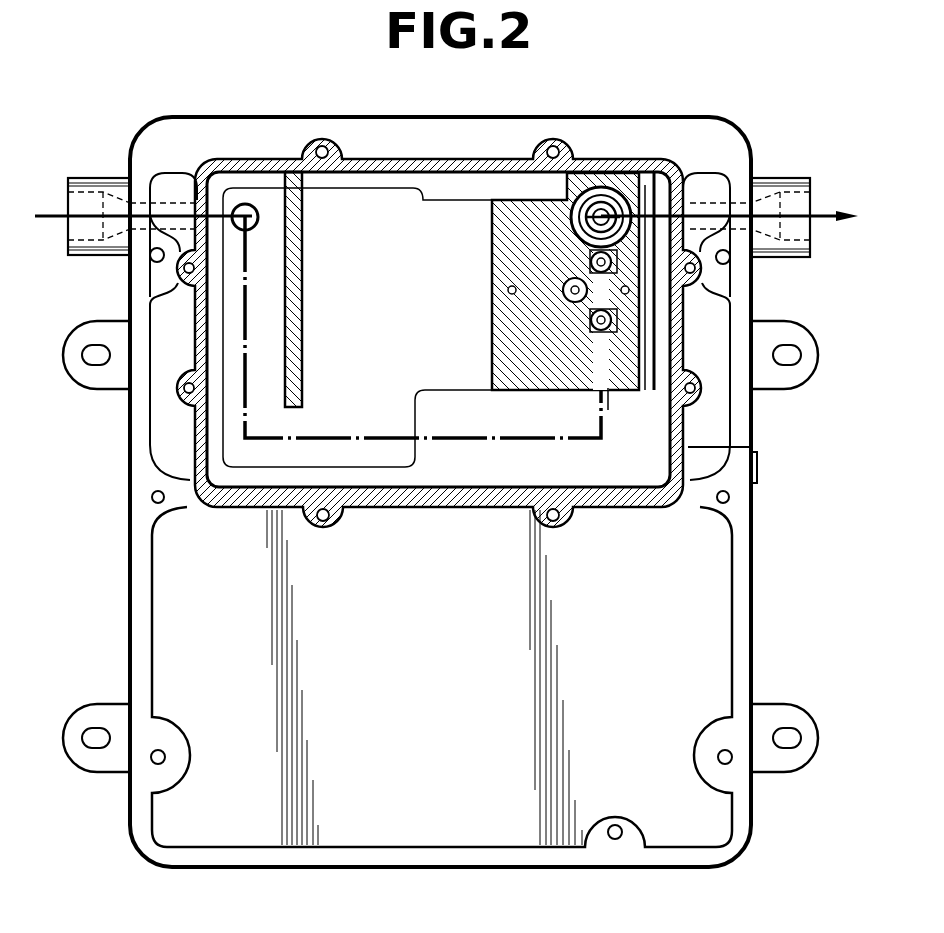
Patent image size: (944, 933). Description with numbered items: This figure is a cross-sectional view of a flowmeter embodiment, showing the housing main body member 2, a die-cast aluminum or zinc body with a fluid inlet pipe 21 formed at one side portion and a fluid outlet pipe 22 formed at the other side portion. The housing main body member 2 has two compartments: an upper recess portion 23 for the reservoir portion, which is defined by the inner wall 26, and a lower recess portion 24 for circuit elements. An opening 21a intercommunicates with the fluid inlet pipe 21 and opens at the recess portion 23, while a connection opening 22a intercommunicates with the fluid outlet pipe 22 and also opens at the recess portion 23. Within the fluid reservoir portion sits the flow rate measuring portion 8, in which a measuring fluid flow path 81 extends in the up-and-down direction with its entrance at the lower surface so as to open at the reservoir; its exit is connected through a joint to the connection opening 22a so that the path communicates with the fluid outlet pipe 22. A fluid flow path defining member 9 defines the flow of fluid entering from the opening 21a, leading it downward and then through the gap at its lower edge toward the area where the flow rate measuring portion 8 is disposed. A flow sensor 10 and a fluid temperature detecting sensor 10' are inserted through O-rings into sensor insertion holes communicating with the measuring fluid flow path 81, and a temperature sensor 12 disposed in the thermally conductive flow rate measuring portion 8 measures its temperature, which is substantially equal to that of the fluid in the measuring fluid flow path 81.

The housing main body member 2 is at (437, 119).
The flow rate measuring portion 8 is at (510, 256).
The fluid flow path defining member 9 is at (302, 342).
The flow sensor 10 is at (652, 340).
The fluid temperature detecting sensor 10' is at (656, 288).
The temperature sensor 12 is at (564, 291).
The fluid inlet pipe 21 is at (103, 178).
The opening 21a is at (258, 217).
The fluid outlet pipe 22 is at (783, 178).
The connection opening 22a is at (594, 178).
The recess portion for the reservoir portion 23 is at (505, 462).
The recess portion for circuit elements 24 is at (702, 645).
The inner wall 26 is at (413, 502).
The measuring fluid flow path 81 is at (608, 396).